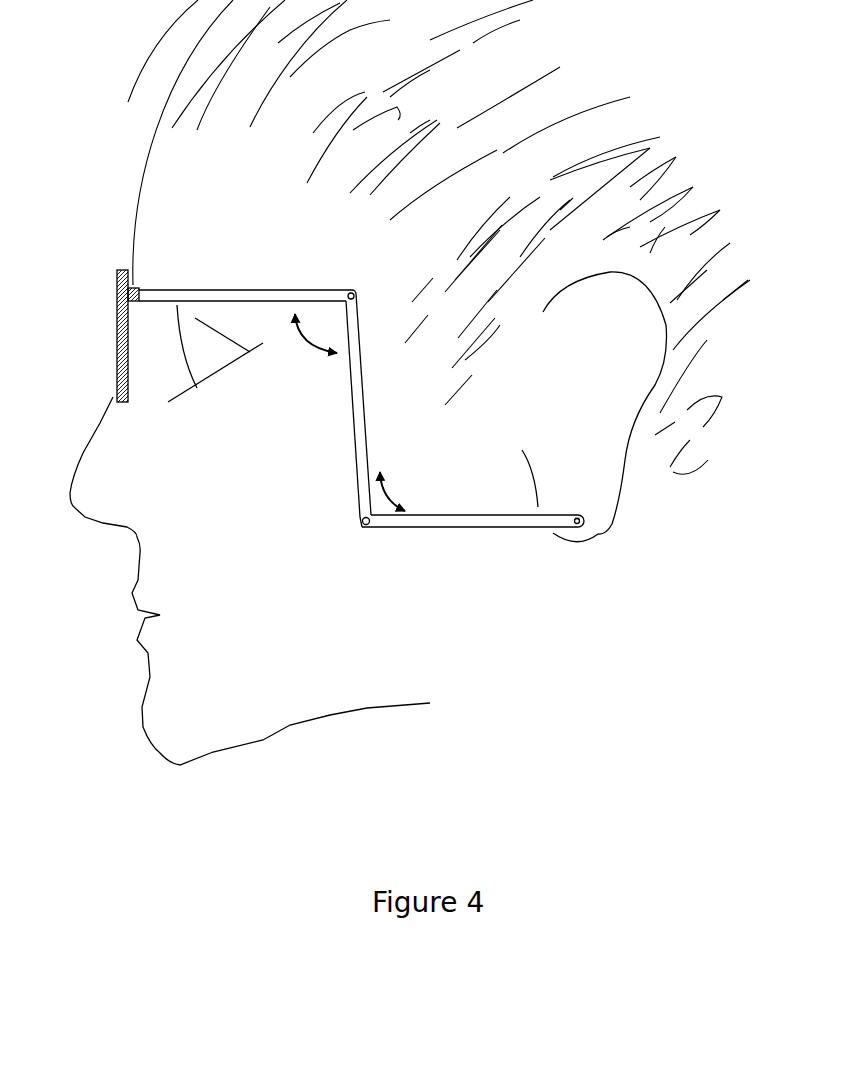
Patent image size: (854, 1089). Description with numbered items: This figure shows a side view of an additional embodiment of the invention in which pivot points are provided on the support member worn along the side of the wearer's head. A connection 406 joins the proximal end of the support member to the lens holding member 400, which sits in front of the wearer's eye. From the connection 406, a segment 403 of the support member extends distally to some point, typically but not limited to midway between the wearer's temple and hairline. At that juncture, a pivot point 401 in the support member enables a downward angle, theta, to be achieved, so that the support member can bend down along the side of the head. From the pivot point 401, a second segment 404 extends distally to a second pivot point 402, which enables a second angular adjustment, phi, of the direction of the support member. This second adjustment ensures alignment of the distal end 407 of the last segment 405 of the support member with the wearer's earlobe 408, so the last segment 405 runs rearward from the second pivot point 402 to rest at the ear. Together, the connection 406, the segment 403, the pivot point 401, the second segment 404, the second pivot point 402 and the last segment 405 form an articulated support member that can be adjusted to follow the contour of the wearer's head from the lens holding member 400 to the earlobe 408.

The lens holding member 400 is at (110, 332).
The pivot point 401 is at (358, 289).
The second pivot point 402 is at (362, 527).
The segment 403 is at (260, 299).
The second segment 404 is at (355, 398).
The last segment 405 is at (452, 527).
The connection 406 is at (137, 290).
The distal end 407 is at (580, 523).
The earlobe 408 is at (593, 432).